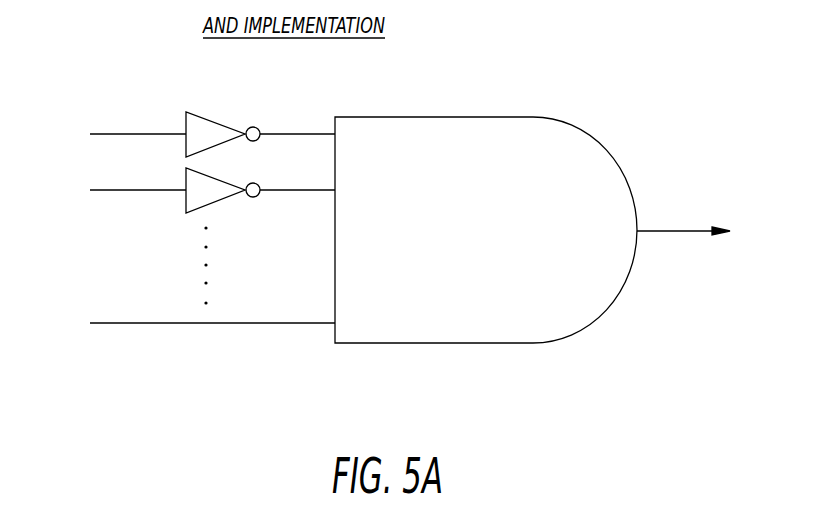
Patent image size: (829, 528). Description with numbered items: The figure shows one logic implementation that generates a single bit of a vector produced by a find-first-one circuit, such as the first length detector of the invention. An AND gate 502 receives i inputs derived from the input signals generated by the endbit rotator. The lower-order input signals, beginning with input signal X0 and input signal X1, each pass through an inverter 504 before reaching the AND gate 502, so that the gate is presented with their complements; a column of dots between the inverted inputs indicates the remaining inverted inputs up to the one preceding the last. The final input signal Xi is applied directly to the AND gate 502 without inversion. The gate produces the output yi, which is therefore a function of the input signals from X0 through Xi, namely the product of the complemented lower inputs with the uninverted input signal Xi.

The AND gate 502 is at (608, 155).
The inverter 504 is at (215, 118).
The input signal x0 X0 is at (115, 135).
The input signal x1 X1 is at (115, 191).
The input signal xi Xi is at (190, 321).
The output yi is at (693, 209).